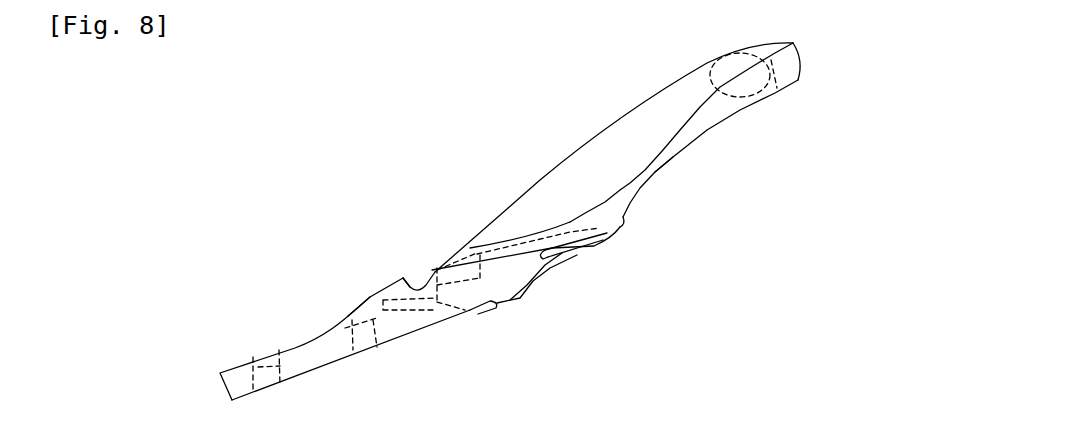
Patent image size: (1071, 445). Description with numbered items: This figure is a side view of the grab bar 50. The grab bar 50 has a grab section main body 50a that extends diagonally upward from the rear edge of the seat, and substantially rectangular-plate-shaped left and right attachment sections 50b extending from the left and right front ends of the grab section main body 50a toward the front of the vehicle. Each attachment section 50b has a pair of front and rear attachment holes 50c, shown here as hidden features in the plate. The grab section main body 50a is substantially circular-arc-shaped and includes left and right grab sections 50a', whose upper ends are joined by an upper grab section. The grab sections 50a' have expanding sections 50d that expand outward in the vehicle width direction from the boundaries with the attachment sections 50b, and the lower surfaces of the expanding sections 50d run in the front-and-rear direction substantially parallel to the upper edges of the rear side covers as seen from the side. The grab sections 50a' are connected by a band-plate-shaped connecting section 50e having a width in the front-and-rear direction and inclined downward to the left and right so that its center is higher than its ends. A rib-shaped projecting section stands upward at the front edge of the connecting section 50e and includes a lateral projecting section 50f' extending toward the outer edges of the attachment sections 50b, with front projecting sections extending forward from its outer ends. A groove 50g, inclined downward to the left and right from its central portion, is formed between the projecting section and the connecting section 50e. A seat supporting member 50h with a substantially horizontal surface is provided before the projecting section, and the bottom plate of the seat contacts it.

The grab bar 50 is at (590, 102).
The grab section main body 50a is at (714, 132).
The grab section 50a' is at (702, 199).
The attachment section 50b is at (300, 350).
The attachment hole 50c is at (250, 357).
The expanding section 50d is at (520, 233).
The connecting section 50e is at (573, 253).
The lateral projecting section 50f' is at (384, 218).
The groove 50g is at (427, 267).
The seat supporting member 50h is at (387, 293).